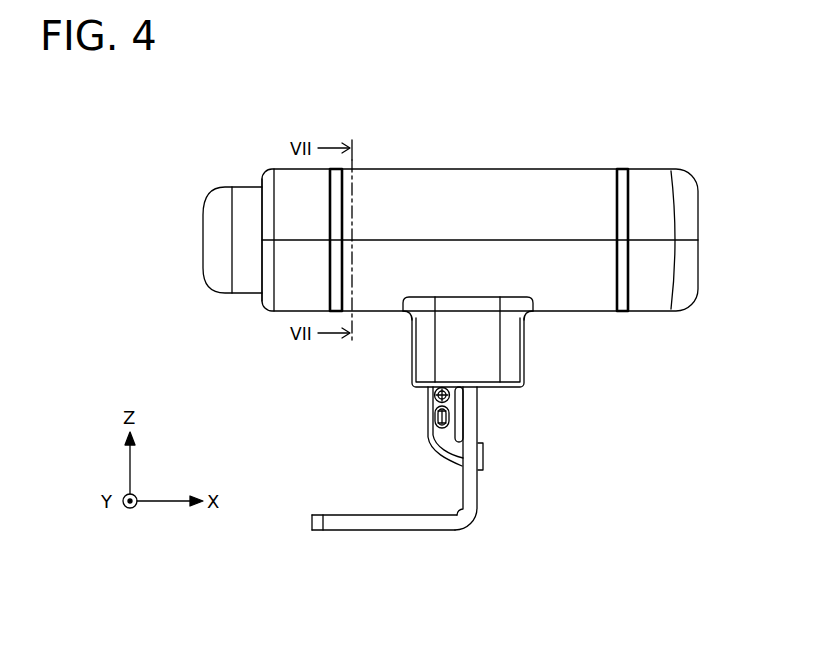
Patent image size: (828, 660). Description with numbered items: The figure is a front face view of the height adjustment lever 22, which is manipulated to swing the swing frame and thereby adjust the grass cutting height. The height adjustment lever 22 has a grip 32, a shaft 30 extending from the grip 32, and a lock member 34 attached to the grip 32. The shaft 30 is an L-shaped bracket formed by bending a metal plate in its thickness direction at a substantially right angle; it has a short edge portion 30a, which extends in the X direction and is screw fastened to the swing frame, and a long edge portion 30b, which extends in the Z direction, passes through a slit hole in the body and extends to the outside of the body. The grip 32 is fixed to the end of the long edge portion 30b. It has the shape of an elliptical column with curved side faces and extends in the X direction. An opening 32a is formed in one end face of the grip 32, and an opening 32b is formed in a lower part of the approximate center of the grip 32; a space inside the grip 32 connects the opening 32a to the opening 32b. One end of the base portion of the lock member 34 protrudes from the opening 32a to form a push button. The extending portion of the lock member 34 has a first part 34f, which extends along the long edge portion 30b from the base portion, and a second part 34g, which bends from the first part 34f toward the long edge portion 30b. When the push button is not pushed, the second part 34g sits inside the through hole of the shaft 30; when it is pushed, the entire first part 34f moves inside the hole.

The height adjustment lever 22 is at (368, 76).
The grip 32 is at (538, 183).
The opening 32a is at (263, 200).
The opening 32b is at (492, 388).
The lock member 34 is at (213, 200).
The first part 34f is at (437, 415).
The second part 34g is at (458, 464).
The shaft 30 is at (411, 510).
The short edge portion 30a is at (393, 526).
The long edge portion 30b is at (473, 483).